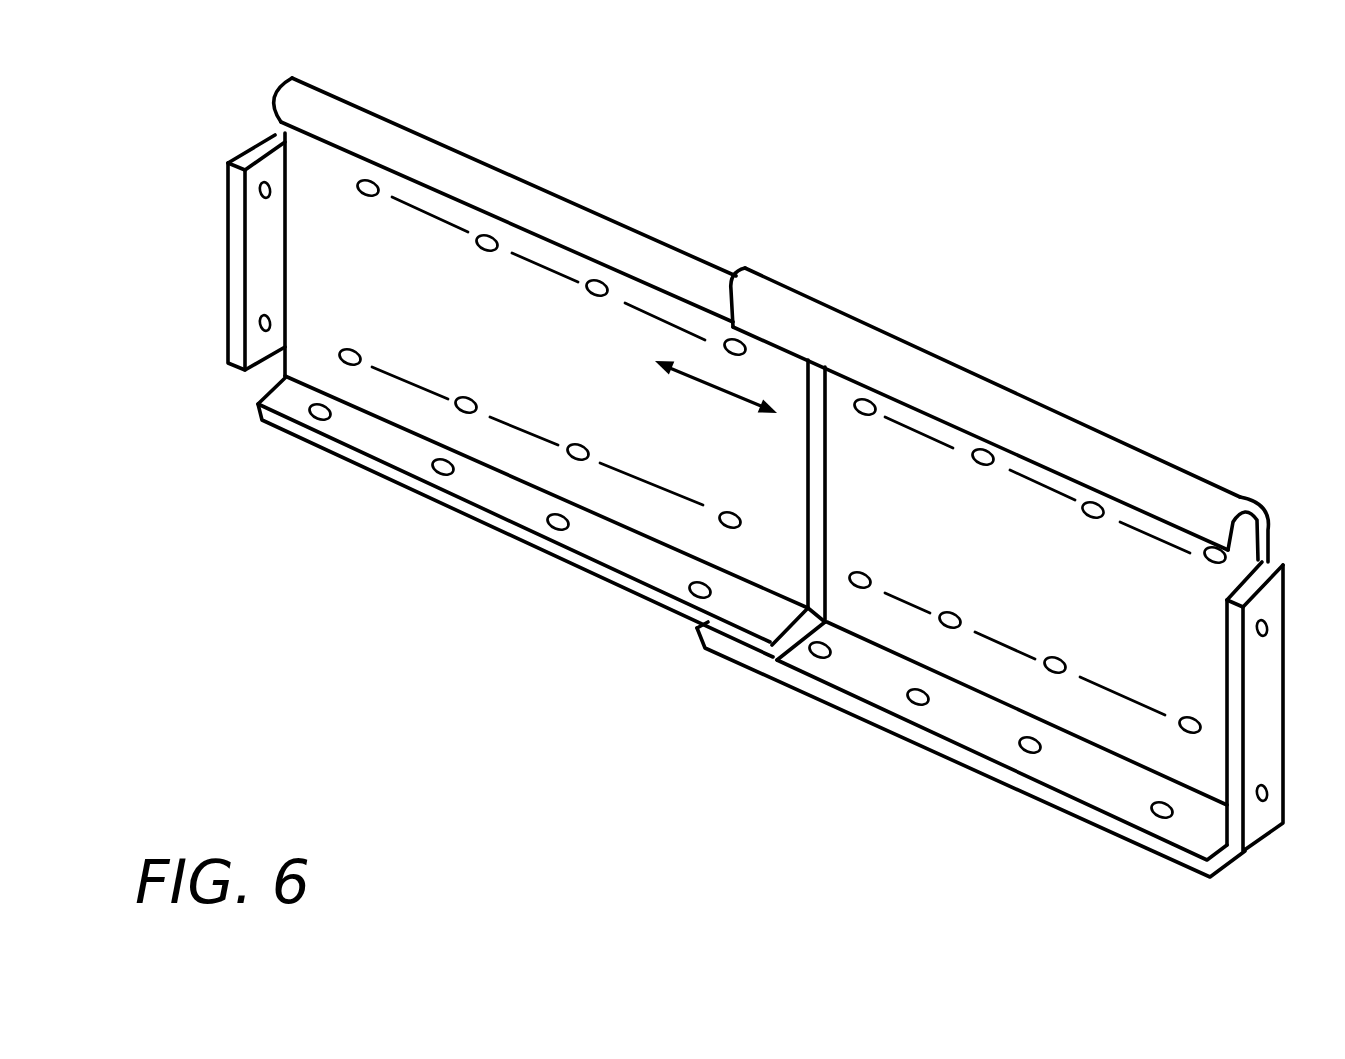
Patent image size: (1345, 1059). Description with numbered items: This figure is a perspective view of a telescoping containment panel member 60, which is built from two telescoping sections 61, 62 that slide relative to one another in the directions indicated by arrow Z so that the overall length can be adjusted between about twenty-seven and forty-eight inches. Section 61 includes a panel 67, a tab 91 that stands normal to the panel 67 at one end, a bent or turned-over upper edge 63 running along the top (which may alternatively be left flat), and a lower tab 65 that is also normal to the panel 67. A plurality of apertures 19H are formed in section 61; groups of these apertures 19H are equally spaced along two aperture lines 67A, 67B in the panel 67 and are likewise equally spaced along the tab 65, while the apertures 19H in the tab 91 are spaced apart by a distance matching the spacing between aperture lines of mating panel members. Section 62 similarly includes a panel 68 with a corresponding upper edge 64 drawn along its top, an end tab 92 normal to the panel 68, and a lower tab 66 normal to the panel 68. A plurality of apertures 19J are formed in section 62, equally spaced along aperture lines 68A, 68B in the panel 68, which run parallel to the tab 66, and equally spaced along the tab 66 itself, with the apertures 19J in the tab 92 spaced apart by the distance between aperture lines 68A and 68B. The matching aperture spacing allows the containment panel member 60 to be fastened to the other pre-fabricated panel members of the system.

The telescoping containment panel member 60 is at (777, 238).
The telescoping section 61 is at (484, 150).
The telescoping section 62 is at (1119, 412).
The upper edge 63 is at (378, 126).
The upper rail of second bracket member 64 is at (830, 310).
The tab 65 is at (361, 461).
The tab 66 is at (864, 710).
The panel 67 is at (580, 378).
The aperture line 67A is at (642, 484).
The aperture line 67B is at (640, 300).
The panel 68 is at (1123, 598).
The aperture line 68A is at (1147, 708).
The aperture line 68B is at (915, 432).
The apertures 19H is at (262, 200).
The apertures 19J is at (863, 575).
The tab 91 is at (237, 300).
The tab 92 is at (1287, 563).
The arrow Z is at (724, 390).